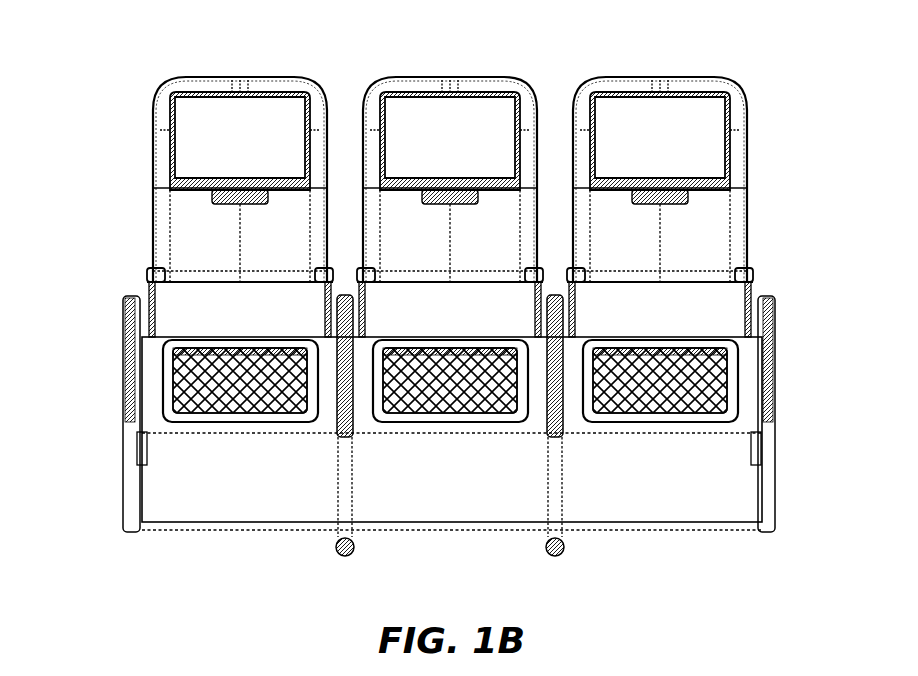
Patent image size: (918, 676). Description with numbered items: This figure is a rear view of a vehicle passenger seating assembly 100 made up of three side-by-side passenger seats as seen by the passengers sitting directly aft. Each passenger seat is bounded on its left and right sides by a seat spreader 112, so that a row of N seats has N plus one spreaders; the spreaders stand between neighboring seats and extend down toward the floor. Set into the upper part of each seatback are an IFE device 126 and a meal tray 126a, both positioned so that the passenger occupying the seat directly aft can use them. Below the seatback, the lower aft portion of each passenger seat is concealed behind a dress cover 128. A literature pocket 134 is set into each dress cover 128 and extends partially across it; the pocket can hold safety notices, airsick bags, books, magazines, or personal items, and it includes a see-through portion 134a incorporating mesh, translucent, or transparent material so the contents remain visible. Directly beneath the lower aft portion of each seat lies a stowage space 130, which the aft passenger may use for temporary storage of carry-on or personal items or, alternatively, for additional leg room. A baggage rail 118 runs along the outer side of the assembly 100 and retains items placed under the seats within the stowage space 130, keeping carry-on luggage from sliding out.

The passenger seating assembly 100 is at (103, 63).
The seat spreader 112 is at (347, 403).
The baggage rail 118 is at (765, 508).
The IFE device 126 is at (268, 133).
The meal tray 126a is at (705, 248).
The dress cover 128 is at (537, 417).
The stowage space 130 is at (434, 487).
The literature pocket 134 is at (182, 417).
The see-through portion 134a is at (224, 384).